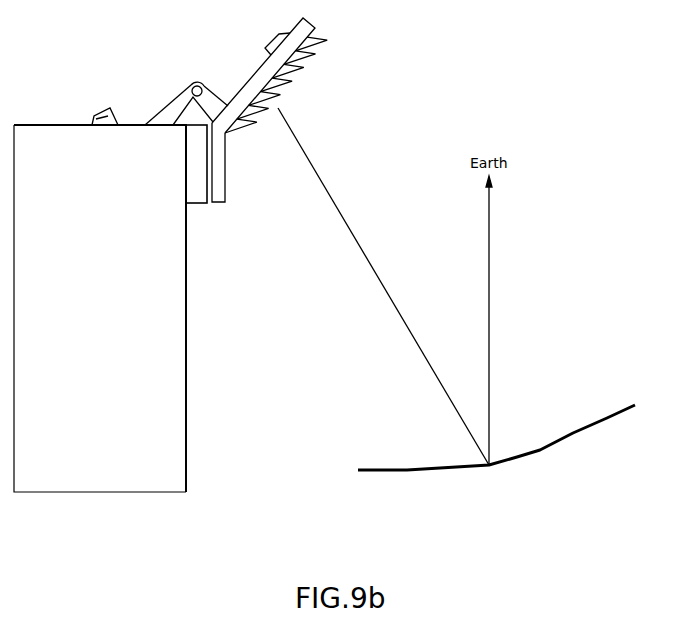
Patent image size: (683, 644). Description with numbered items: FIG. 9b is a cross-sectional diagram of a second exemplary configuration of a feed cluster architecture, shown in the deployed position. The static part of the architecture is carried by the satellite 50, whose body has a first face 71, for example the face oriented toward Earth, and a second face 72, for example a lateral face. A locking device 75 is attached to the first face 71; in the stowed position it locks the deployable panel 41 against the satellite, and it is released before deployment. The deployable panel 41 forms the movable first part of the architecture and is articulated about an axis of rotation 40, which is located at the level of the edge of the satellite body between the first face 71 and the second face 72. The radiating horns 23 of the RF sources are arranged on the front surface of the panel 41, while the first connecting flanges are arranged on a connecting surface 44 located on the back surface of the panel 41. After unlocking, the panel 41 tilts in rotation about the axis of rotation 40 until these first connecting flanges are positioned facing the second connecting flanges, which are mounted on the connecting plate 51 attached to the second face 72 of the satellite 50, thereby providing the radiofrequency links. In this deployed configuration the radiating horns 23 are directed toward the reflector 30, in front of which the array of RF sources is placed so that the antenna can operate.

The radiating horn 23 is at (318, 57).
The reflector 30 is at (538, 453).
The axis of rotation 40 is at (194, 82).
The deployable panel 41 is at (228, 134).
The connecting surface 44 is at (212, 177).
The satellite 50 is at (130, 480).
The connecting plate 51 is at (195, 192).
The first face 71 is at (55, 125).
The second face 72 is at (187, 303).
The locking device 75 is at (100, 115).